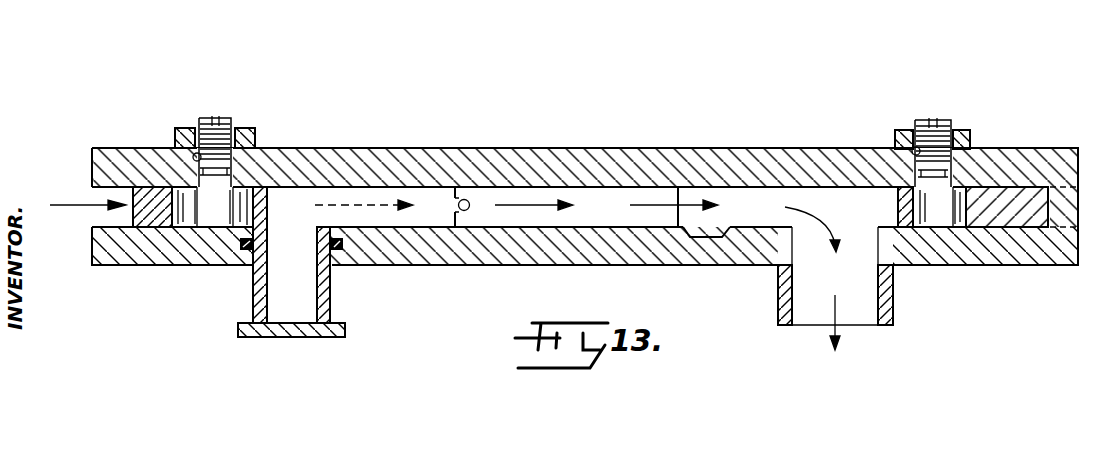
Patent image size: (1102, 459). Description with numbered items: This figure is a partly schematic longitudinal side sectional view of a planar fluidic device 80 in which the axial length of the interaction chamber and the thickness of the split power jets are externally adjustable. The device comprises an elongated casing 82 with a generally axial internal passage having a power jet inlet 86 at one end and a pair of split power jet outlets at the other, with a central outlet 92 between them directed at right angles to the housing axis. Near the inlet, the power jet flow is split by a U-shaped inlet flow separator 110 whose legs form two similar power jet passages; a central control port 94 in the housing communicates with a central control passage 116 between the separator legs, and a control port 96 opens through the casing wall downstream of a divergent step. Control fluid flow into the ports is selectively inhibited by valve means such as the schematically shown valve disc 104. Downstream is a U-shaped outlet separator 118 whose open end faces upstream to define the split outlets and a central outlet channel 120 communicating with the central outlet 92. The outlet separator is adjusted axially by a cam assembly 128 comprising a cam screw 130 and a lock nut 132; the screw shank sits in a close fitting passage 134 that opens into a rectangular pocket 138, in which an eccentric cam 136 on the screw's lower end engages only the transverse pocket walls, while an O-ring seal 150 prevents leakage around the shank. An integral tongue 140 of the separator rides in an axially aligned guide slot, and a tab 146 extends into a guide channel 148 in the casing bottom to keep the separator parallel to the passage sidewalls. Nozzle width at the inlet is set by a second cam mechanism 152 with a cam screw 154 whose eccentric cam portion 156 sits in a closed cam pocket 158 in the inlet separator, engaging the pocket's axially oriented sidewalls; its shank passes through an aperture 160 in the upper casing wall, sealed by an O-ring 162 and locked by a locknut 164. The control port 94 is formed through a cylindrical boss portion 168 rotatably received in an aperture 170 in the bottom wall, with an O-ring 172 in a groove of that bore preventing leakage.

The planar fluidic device 80 is at (559, 140).
The casing 82 is at (620, 146).
The power jet inlet 86 is at (93, 186).
The central outlet 92 is at (817, 313).
The central control port 94 is at (298, 312).
The control port 96 is at (467, 198).
The valve disc 104 is at (334, 340).
The inlet flow separator 110 is at (462, 218).
The central control passage 116 is at (388, 188).
The outlet separator 118 is at (680, 195).
The central outlet channel 120 is at (758, 197).
The cam assembly 128 is at (962, 120).
The cam screw 130 is at (946, 127).
The lock nut 132 is at (902, 136).
The passage 134 is at (913, 149).
The cam 136 is at (952, 217).
The pocket 138 is at (915, 210).
The tongue 140 is at (1020, 200).
The tab 146 is at (713, 232).
The guide channel 148 is at (693, 235).
The O-ring seal 150 is at (950, 168).
The second cam mechanism 152 is at (229, 120).
The cam screw 154 is at (208, 122).
The cam portion 156 is at (208, 213).
The cam pocket 158 is at (180, 213).
The aperture 160 is at (194, 155).
The O-ring 162 is at (228, 170).
The locknut 164 is at (246, 128).
The cylindrical boss portion 168 is at (255, 290).
The aperture 170 is at (323, 268).
The O-ring 172 is at (343, 249).